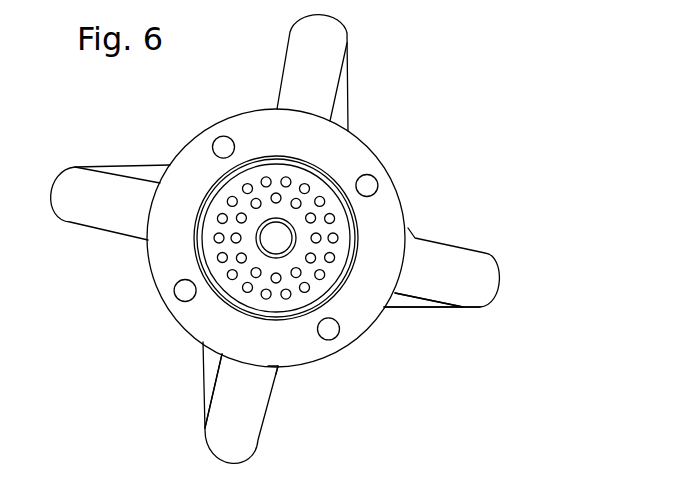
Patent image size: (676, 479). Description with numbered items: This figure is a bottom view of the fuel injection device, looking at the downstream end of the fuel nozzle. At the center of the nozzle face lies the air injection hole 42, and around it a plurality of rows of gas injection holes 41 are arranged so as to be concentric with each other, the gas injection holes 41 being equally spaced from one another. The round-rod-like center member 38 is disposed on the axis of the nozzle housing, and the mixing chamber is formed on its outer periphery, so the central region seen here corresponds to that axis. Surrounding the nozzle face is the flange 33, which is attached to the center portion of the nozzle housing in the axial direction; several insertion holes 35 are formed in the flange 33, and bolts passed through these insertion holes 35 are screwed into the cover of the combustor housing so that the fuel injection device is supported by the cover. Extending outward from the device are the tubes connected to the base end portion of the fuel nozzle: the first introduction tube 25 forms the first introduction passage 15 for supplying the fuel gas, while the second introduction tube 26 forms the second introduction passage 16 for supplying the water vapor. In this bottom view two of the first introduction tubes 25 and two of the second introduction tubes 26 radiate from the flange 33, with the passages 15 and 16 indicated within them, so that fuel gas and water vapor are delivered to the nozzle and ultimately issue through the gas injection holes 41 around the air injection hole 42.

The first introduction passage 15 is at (252, 402).
The second introduction passage 16 is at (455, 290).
The first introduction tube 25 is at (327, 45).
The second introduction tube 26 is at (83, 213).
The flange 33 is at (346, 145).
The insertion hole 35 is at (371, 182).
The center member 38 is at (273, 233).
The gas injection holes 41 is at (264, 298).
The air injection hole 42 is at (296, 233).